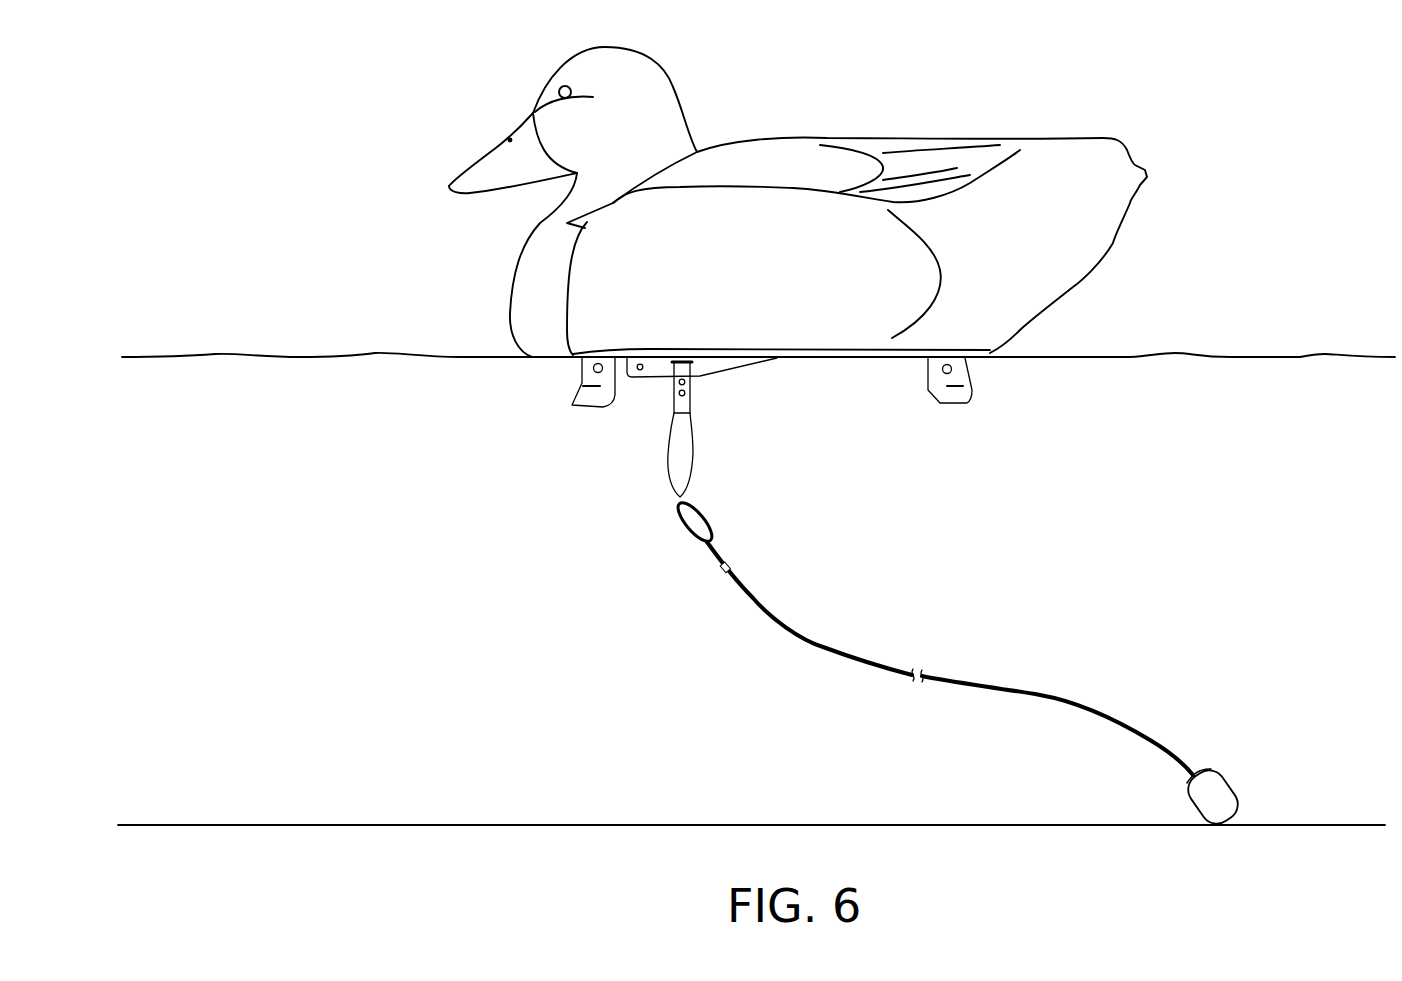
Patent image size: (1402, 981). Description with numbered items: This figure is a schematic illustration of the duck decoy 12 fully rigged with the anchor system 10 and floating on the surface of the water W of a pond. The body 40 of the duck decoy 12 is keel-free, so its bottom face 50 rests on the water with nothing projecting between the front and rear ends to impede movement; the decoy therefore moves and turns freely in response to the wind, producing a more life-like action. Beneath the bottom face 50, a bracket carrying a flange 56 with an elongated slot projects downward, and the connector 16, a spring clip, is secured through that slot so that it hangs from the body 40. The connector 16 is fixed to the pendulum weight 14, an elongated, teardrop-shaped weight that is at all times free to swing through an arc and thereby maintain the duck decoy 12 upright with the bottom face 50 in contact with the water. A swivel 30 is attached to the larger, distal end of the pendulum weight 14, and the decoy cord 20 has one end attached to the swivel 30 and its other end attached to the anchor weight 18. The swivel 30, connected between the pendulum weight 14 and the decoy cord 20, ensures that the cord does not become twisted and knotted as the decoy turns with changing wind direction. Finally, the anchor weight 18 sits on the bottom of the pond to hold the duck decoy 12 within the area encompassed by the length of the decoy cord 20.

The anchor system 10 is at (693, 636).
The duck decoy 12 is at (798, 189).
The pendulum weight 14 is at (677, 477).
The connector 16 is at (673, 397).
The anchor weight 18 is at (1230, 790).
The decoy cord 20 is at (823, 647).
The swivel 30 is at (713, 524).
The body 40 is at (760, 155).
The bottom face 50 is at (855, 360).
The flange 56 is at (722, 368).
The water W is at (1243, 357).